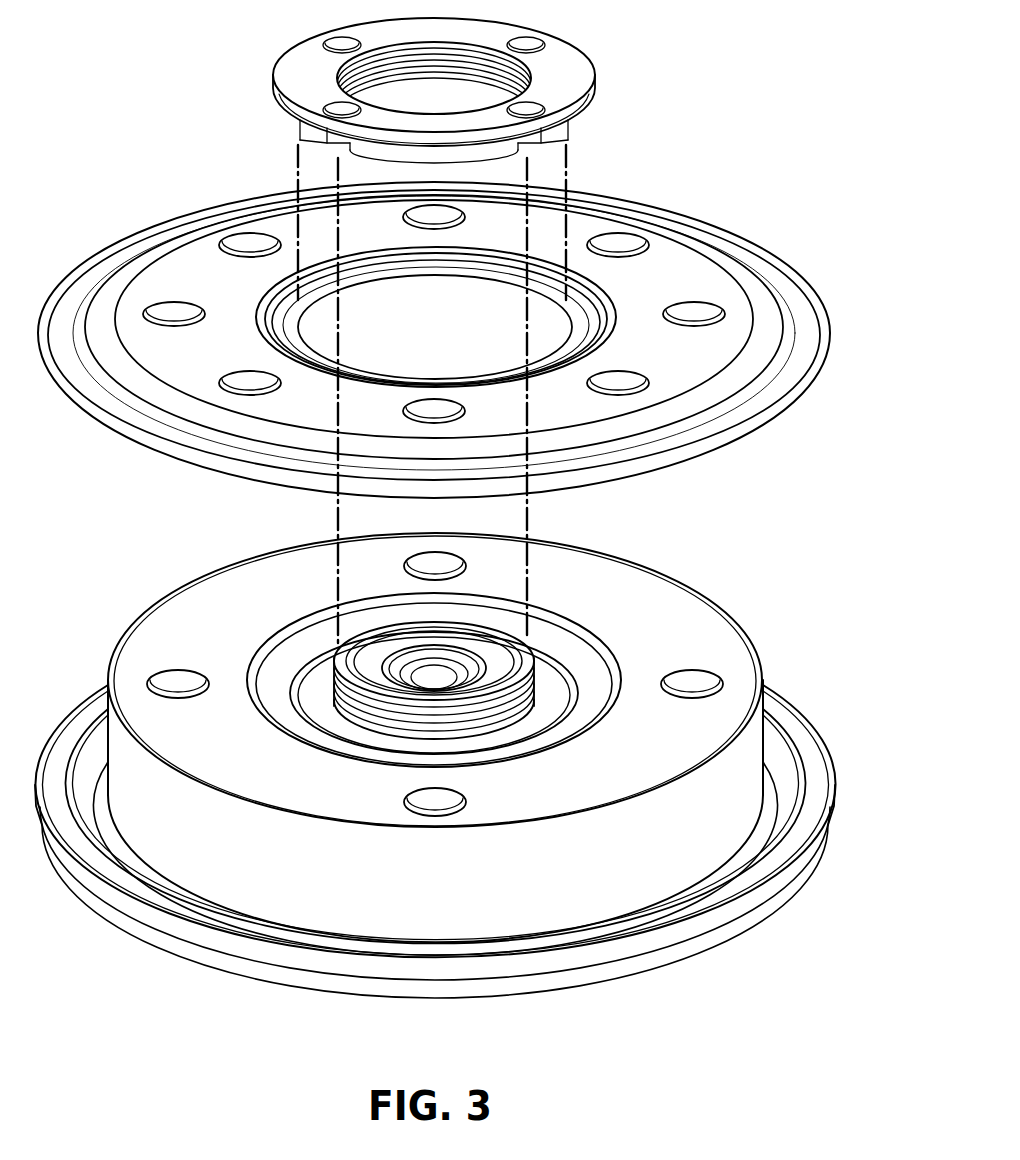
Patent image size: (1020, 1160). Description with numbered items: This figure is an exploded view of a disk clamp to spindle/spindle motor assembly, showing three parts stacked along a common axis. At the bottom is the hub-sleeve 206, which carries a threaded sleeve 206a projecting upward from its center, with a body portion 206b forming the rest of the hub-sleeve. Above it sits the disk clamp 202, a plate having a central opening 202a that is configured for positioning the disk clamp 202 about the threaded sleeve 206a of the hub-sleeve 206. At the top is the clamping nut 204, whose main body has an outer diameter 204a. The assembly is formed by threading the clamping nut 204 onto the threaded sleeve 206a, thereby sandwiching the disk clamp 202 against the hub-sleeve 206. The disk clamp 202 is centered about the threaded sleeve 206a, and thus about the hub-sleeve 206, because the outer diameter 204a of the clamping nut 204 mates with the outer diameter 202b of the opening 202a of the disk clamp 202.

The disk clamp 202 is at (690, 262).
The central opening 202a is at (417, 335).
The outer diameter of the opening 202b is at (417, 283).
The clamping nut 204 is at (568, 74).
The outer diameter of the main body 204a is at (322, 133).
The hub-sleeve 206 is at (88, 858).
The threaded sleeve 206a is at (493, 708).
The cylindrical body 206b is at (648, 762).